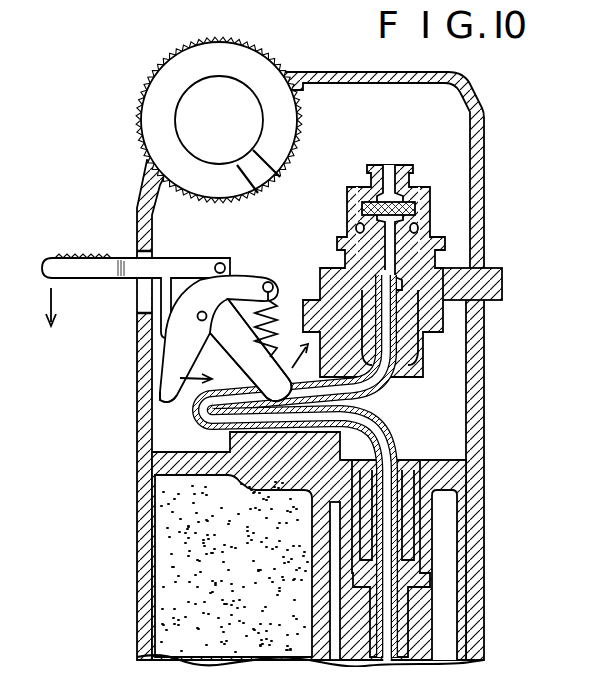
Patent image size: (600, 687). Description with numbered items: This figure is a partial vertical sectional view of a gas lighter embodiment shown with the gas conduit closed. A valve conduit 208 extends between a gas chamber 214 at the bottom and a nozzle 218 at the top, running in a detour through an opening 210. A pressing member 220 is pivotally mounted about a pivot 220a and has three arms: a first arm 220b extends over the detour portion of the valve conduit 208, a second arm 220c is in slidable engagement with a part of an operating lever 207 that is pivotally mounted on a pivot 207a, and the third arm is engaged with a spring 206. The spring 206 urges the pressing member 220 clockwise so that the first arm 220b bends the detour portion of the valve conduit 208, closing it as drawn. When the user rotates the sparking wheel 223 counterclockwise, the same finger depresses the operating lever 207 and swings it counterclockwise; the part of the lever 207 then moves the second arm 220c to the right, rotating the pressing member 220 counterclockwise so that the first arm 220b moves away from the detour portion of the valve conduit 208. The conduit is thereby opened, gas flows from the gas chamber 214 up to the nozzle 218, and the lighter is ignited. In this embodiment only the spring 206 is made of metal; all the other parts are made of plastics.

The spring 206 is at (287, 300).
The operating lever 207 is at (55, 257).
The pivot 207a is at (227, 264).
The valve conduit 208 is at (398, 392).
The opening 210 is at (388, 418).
The gas chamber 214 is at (452, 641).
The nozzle 218 is at (410, 166).
The pressing member 220 is at (165, 345).
The pivot 220a is at (202, 310).
The first arm 220b is at (175, 350).
The second arm 220c is at (168, 407).
The sparking wheel 223 is at (247, 84).